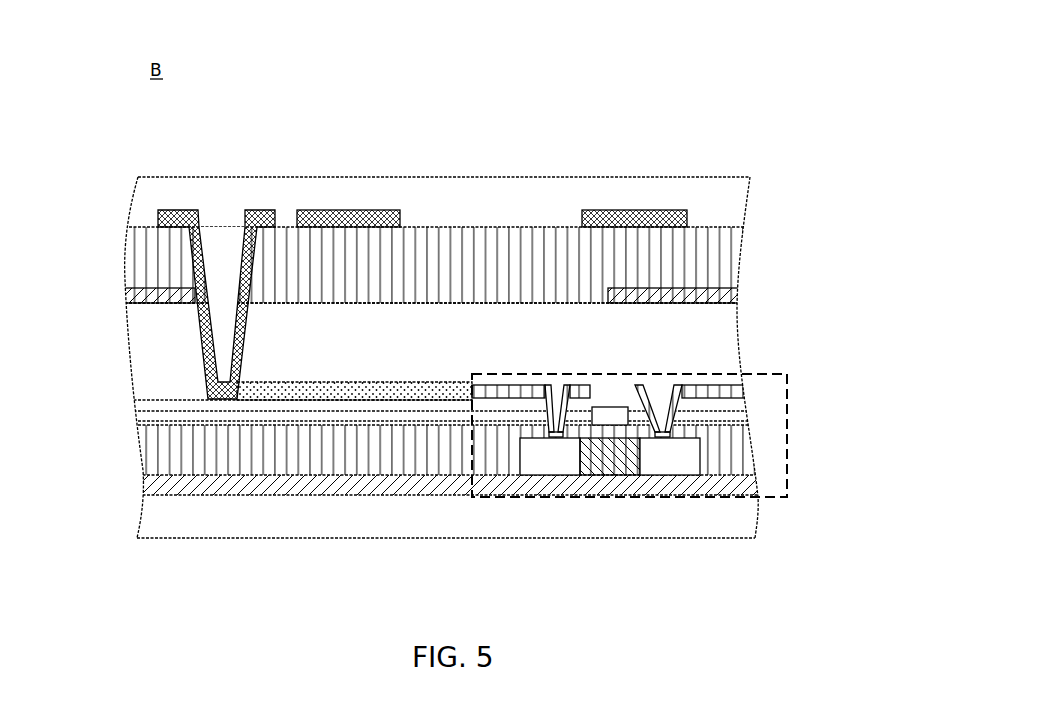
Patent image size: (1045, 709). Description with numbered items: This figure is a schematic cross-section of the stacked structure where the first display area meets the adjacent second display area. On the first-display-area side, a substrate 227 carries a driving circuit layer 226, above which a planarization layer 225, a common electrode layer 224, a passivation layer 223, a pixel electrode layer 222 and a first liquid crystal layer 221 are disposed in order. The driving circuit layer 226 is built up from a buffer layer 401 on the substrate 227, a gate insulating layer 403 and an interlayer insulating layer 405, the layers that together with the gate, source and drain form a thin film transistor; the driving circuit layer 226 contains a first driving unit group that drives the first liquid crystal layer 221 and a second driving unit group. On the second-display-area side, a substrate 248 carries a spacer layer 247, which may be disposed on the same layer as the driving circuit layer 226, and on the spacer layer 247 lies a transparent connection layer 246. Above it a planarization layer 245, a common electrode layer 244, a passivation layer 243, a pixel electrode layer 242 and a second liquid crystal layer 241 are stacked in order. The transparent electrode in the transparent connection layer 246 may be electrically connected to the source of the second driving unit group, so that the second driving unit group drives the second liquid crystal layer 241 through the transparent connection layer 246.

The first liquid crystal layer 221 is at (725, 204).
The pixel electrode layer 222 is at (636, 212).
The passivation layer 223 is at (730, 255).
The common electrode layer 224 is at (737, 296).
The planarization layer 225 is at (732, 324).
The driving circuit layer 226 is at (787, 497).
The substrate 227 is at (737, 530).
The second liquid crystal layer 241 is at (138, 203).
The pixel electrode layer 242 is at (348, 212).
The passivation layer 243 is at (128, 241).
The common electrode layer 244 is at (128, 294).
The planarization layer 245 is at (128, 345).
The transparent connection layer 246 is at (284, 393).
The spacer layer 247 is at (128, 412).
The substrate 248 is at (143, 513).
The buffer layer 401 is at (748, 487).
The gate insulating layer 403 is at (735, 440).
The interlayer insulating layer 405 is at (738, 412).